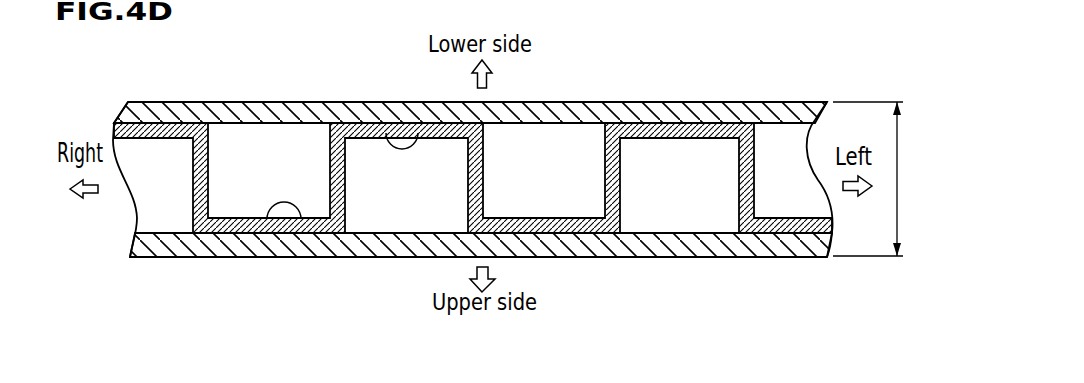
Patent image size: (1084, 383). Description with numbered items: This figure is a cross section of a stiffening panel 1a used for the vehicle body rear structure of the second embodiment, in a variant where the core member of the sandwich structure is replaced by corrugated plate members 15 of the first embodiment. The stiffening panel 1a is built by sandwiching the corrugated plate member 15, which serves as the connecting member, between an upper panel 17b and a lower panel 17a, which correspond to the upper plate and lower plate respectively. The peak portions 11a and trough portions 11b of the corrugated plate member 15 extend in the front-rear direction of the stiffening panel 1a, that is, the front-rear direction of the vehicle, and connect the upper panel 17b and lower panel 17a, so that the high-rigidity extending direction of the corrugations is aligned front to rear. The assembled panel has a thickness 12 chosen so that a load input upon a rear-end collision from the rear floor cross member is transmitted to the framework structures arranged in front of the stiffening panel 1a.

The stiffening panel 1a is at (298, 101).
The peak portions 11a is at (386, 133).
The trough portions 11b is at (301, 219).
The thickness 12 is at (885, 179).
The corrugated plate member 15 is at (624, 190).
The lower panel 17a is at (552, 102).
The upper panel 17b is at (558, 250).